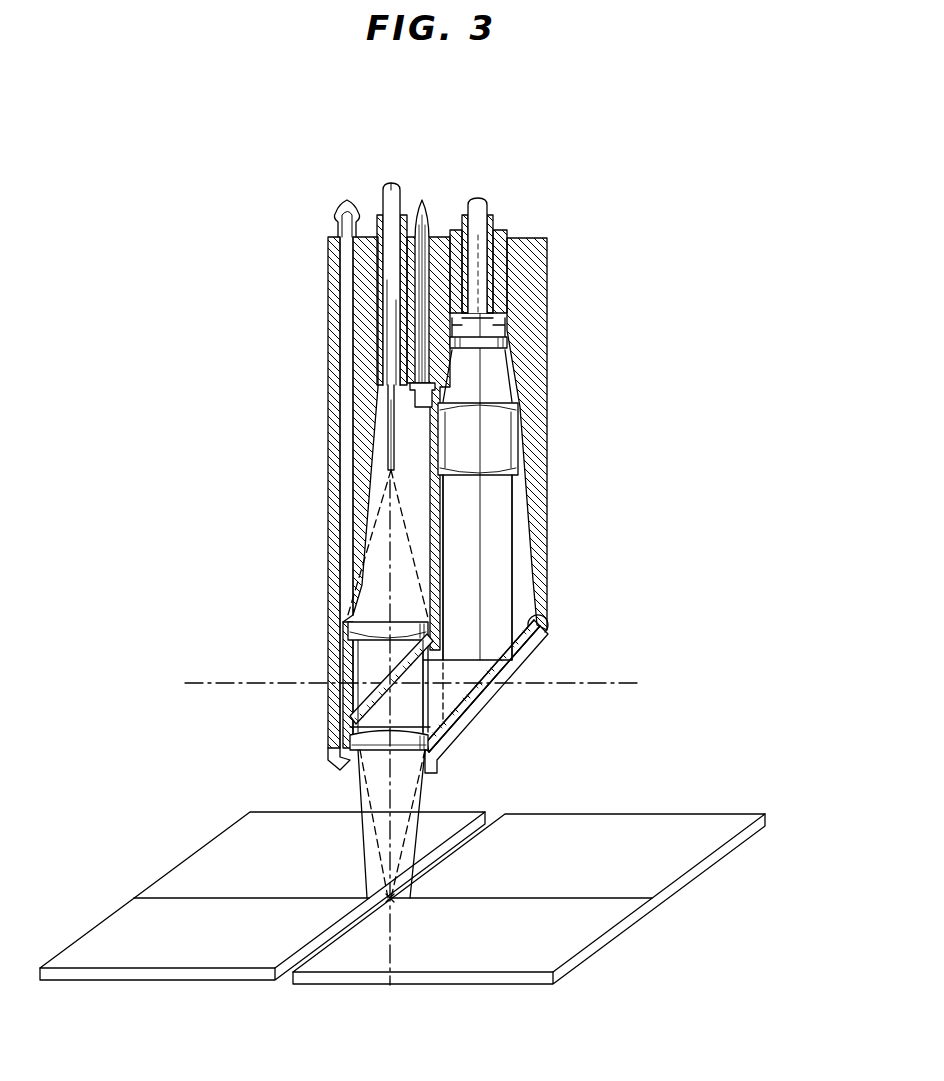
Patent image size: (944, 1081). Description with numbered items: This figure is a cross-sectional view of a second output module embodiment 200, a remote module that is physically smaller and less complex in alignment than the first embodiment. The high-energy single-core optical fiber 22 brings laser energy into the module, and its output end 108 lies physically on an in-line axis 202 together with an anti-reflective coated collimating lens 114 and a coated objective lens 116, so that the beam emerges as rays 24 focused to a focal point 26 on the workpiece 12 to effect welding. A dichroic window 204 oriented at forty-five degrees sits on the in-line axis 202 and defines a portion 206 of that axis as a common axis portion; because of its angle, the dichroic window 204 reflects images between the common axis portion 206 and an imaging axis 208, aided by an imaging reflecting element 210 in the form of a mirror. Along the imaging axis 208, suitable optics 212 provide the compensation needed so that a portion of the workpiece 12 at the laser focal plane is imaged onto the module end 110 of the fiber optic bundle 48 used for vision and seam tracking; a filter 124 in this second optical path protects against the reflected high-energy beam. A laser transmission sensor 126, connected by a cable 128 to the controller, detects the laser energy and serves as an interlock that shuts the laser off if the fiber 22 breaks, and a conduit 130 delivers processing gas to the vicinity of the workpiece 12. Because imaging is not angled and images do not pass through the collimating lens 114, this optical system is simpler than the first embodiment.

The workpiece 12 is at (627, 830).
The single-core optical fiber 22 is at (388, 203).
The rays 24 is at (420, 806).
The focal point 26 is at (392, 900).
The fiber optic bundle 48 is at (486, 210).
The output end of high-energy optical fiber 108 is at (387, 470).
The module end of fiber optic bundle 110 is at (490, 350).
The collimating lens 114 is at (370, 637).
The objective lens 116 is at (367, 778).
The filter 124 is at (548, 318).
The laser transmission sensor 126 is at (412, 396).
The cable 128 is at (424, 200).
The conduit 130 is at (347, 240).
The output module embodiment 200 is at (634, 218).
The in-line axis 202 is at (385, 578).
The dichroic window 204 is at (370, 697).
The common axis portion 206 is at (388, 828).
The imaging axis 208 is at (480, 550).
The imaging reflecting element 210 is at (545, 632).
The optics 212 is at (505, 440).